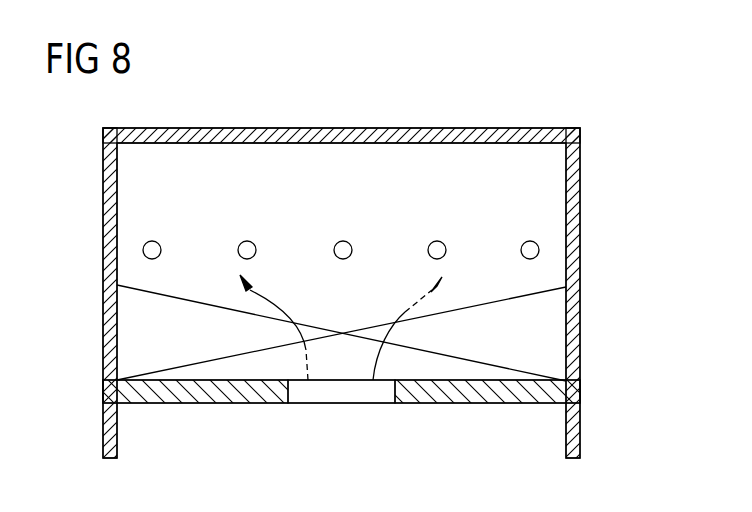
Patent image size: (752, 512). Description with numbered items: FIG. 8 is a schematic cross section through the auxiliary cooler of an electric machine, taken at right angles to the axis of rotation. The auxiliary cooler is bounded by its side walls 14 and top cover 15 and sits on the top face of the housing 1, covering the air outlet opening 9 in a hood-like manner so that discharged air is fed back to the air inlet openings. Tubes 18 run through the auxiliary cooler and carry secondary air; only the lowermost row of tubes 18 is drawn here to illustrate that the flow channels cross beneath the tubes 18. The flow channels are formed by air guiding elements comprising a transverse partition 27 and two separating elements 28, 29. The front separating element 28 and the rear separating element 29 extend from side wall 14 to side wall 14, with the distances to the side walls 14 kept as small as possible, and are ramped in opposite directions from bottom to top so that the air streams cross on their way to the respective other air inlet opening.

The housing 1 is at (203, 402).
The air outlet opening 9 is at (338, 398).
The side walls 14 is at (103, 206).
The top cover 15 is at (366, 130).
The tubes 18 is at (243, 243).
The transverse partition 27 is at (432, 180).
The front separating element 28 is at (530, 300).
The rear separating element 29 is at (160, 296).